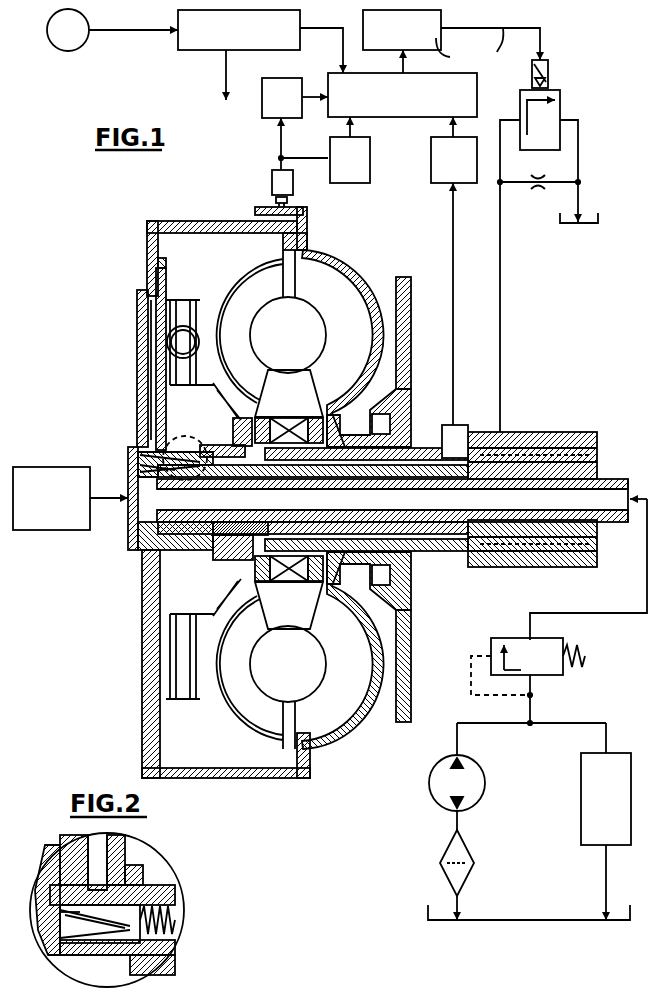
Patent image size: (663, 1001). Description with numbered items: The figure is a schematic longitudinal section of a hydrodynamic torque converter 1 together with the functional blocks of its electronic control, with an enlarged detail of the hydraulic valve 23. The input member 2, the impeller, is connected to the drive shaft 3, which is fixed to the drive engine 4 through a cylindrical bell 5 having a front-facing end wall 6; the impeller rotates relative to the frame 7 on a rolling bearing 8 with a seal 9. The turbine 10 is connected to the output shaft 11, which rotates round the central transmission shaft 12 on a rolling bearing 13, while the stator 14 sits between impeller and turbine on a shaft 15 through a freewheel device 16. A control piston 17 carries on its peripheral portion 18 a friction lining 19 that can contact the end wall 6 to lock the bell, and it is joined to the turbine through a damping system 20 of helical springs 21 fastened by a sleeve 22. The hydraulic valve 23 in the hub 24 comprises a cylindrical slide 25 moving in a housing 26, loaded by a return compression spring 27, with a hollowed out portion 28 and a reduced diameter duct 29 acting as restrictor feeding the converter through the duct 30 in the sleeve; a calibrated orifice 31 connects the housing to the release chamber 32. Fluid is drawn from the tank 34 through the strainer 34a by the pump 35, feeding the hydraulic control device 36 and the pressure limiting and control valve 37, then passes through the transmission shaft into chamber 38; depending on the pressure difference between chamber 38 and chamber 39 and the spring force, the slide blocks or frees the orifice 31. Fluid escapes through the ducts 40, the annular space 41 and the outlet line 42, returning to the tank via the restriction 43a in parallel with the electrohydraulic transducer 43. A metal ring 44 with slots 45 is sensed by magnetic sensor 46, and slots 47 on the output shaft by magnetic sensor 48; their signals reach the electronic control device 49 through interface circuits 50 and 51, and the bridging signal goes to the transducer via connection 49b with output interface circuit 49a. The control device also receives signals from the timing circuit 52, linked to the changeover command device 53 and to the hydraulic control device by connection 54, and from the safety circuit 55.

In FIG. 1, the converter 1 is at (340, 262).
In FIG. 1, the input member 2 is at (333, 302).
In FIG. 1, the input shaft 3 is at (104, 499).
In FIG. 1, the drive engine 4 is at (50, 467).
In FIG. 1, the cylindrical bell 5 is at (190, 222).
In FIG. 1, the end wall 6 is at (141, 333).
In FIG. 1, the frame 7 is at (409, 330).
In FIG. 1, the rolling bearing 8 is at (385, 425).
In FIG. 1, the seal 9 is at (403, 395).
In FIG. 1, the output component 10 is at (248, 300).
In FIG. 1, the output shaft 11 is at (583, 432).
In FIG. 1, the central transmission shaft 12 is at (556, 432).
In FIG. 1, the rolling bearing 13 is at (283, 475).
In FIG. 1, the stator 14 is at (291, 372).
In FIG. 1, the shaft 15 is at (571, 432).
In FIG. 1, the freewheel device 16 is at (291, 428).
In FIG. 1, the control piston 17 is at (176, 345).
In FIG. 1, the peripheral portion 18 is at (160, 262).
In FIG. 1, the friction lining 19 is at (150, 288).
In FIG. 1, the damping system 20 is at (198, 305).
In FIG. 1, the helical springs 21 is at (160, 355).
In FIG. 1, the sleeve 22 is at (233, 570).
In FIG. 1, the hydraulic valve 23 is at (192, 440).
In FIG. 2, the hydraulic valve 23 is at (170, 862).
In FIG. 1, the hub 24 is at (150, 562).
In FIG. 2, the hub 24 is at (56, 856).
In FIG. 1, the cylindrical slide 25 is at (137, 453).
In FIG. 2, the cylindrical slide 25 is at (135, 930).
In FIG. 1, the housing 26 is at (138, 478).
In FIG. 2, the housing 26 is at (60, 912).
In FIG. 1, the return compression spring 27 is at (206, 479).
In FIG. 2, the return compression spring 27 is at (175, 895).
In FIG. 1, the hollowed out portion 28 is at (176, 479).
In FIG. 2, the hollowed out portion 28 is at (140, 960).
In FIG. 2, the reduced diameter duct 29 is at (175, 918).
In FIG. 1, the duct 30 is at (243, 479).
In FIG. 1, the calibrated orifice 31 is at (150, 445).
In FIG. 2, the calibrated orifice 31 is at (105, 892).
In FIG. 1, the release chamber 32 is at (148, 428).
In FIG. 2, the release chamber 32 is at (95, 862).
In FIG. 1, the tank 34 is at (575, 226).
In FIG. 1, the strainer 34a is at (450, 848).
In FIG. 1, the pump 35 is at (440, 783).
In FIG. 1, the hydraulic control device 36 is at (581, 792).
In FIG. 1, the pressure limiting and control valve 37 is at (518, 648).
In FIG. 1, the chamber 38 is at (145, 508).
In FIG. 2, the chamber 38 is at (75, 965).
In FIG. 1, the chamber 39 is at (218, 445).
In FIG. 1, the ducts 40 is at (345, 528).
In FIG. 1, the annular space 41 is at (390, 528).
In FIG. 1, the outlet line 42 is at (501, 325).
In FIG. 1, the electrohydraulic transducer 43 is at (520, 104).
In FIG. 1, the restriction 43a is at (538, 190).
In FIG. 1, the circular metal ring 44 is at (262, 208).
In FIG. 1, the slots 45 is at (307, 217).
In FIG. 1, the magnetic sensor 46 is at (293, 186).
In FIG. 1, the slots 47 is at (492, 432).
In FIG. 1, the magnetic sensor 48 is at (458, 425).
In FIG. 1, the electronic control device 49 is at (457, 93).
In FIG. 1, the output interface circuit 49a is at (459, 52).
In FIG. 1, the connection 49b is at (508, 47).
In FIG. 1, the interface circuit 50 is at (360, 162).
In FIG. 1, the interface circuit 51 is at (445, 165).
In FIG. 1, the electronic timing circuit 52 is at (188, 36).
In FIG. 1, the changeover command device 53 is at (70, 42).
In FIG. 1, the connection 54 is at (226, 66).
In FIG. 1, the safety circuit 55 is at (270, 101).